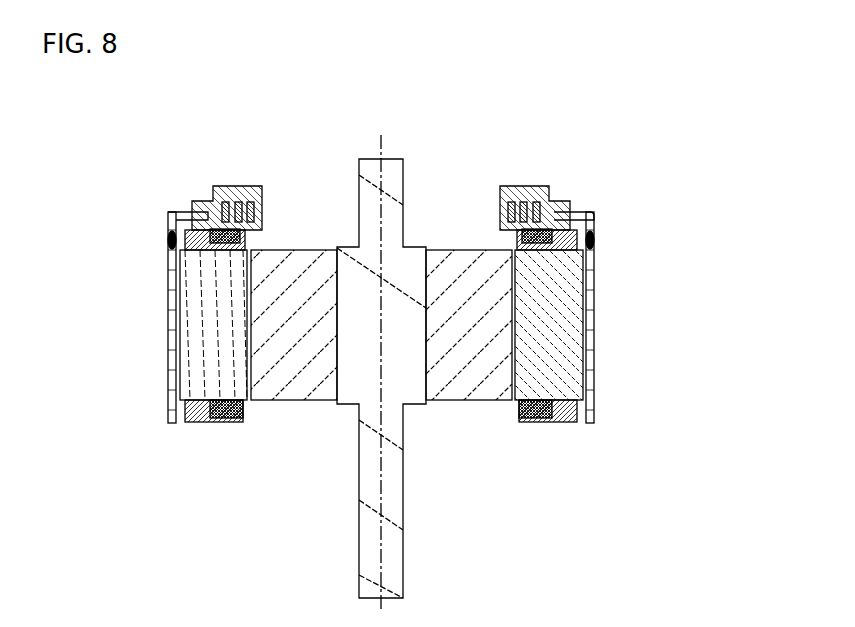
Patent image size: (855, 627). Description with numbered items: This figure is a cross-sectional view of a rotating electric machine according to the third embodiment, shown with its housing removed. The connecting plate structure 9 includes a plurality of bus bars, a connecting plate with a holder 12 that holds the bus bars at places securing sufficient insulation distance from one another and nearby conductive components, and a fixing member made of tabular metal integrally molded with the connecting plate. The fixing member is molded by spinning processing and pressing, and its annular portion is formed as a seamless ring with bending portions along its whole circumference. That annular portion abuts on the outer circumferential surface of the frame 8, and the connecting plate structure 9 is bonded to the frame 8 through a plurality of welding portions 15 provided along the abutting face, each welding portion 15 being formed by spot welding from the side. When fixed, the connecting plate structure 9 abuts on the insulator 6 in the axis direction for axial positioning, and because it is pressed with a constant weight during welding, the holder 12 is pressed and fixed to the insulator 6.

The insulator 6 is at (580, 224).
The frame 8 is at (175, 352).
The connecting plate structure 9 is at (602, 173).
The holder 12 is at (548, 208).
The welding portion 15 is at (168, 240).